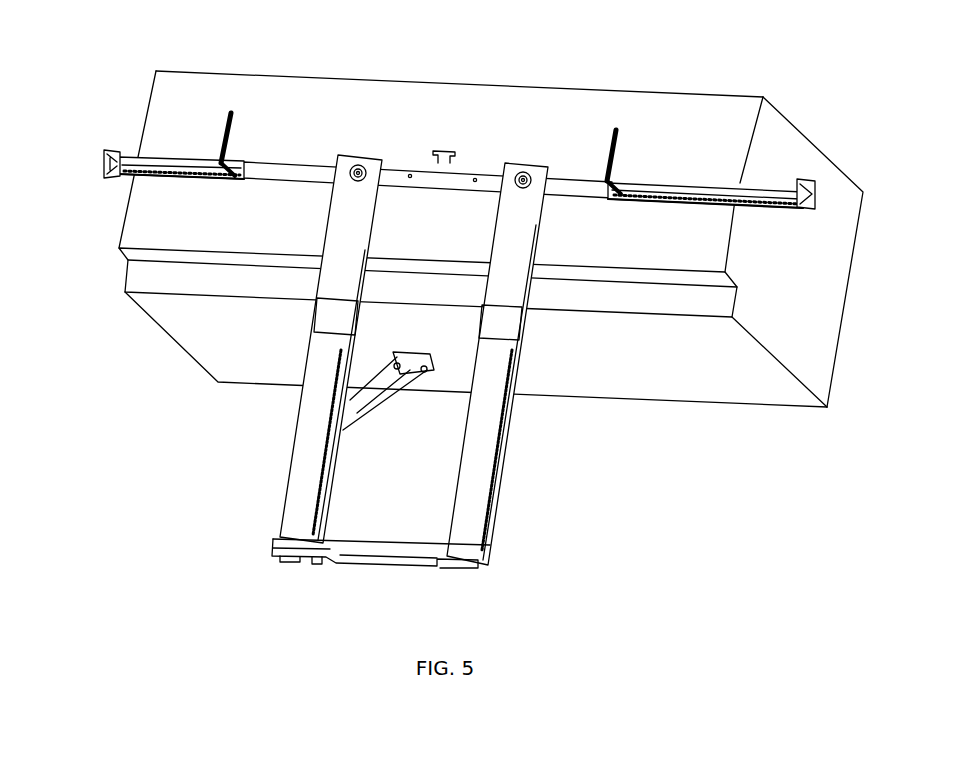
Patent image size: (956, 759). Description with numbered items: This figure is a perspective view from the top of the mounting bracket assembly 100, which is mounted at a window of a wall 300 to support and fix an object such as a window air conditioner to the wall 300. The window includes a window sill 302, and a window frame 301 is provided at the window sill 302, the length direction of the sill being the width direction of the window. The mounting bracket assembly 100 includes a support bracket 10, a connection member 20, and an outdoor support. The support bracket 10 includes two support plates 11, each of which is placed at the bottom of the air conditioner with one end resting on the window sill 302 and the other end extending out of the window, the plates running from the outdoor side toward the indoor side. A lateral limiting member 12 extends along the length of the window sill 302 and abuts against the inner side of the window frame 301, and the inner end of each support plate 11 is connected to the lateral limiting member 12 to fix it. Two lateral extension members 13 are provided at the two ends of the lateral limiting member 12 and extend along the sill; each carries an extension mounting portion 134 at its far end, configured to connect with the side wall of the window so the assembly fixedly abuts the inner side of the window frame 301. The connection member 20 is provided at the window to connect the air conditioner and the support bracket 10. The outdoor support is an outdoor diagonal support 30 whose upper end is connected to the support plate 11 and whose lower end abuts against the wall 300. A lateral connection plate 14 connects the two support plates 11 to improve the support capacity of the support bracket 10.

The mounting bracket assembly 100 is at (445, 316).
The support bracket 10 is at (452, 317).
The support plate 11 is at (307, 502).
The lateral limiting member 12 is at (455, 175).
The lateral extension member 13 is at (452, 136).
The extension mounting portion 134 is at (107, 163).
The lateral connection plate 14 is at (377, 545).
The connection member 20 is at (230, 113).
The outdoor diagonal support 30 is at (368, 408).
The wall 300 is at (448, 246).
The window frame 301 is at (135, 217).
The window sill 302 is at (318, 105).